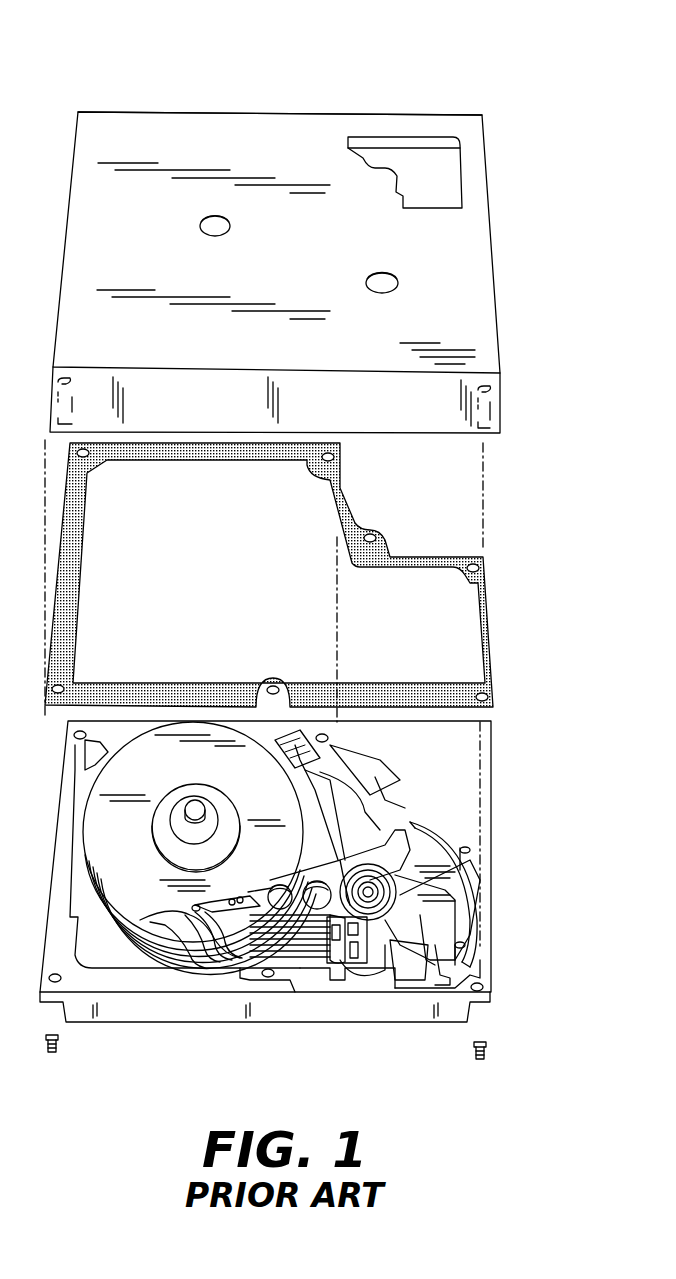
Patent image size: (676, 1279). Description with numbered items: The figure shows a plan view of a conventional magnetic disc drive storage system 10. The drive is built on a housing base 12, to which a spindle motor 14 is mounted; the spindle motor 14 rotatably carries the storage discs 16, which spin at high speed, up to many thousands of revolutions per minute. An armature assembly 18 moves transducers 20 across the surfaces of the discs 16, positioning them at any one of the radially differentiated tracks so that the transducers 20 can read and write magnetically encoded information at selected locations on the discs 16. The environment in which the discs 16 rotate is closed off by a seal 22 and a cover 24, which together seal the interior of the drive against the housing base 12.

The disk drive 10 is at (490, 105).
The base 12 is at (494, 997).
The disk 14 is at (176, 828).
The read/write heads 16 is at (126, 916).
The actuator arm assembly 18 is at (300, 965).
The head suspension 20 is at (212, 898).
The gasket 22 is at (493, 675).
The cover 24 is at (494, 253).